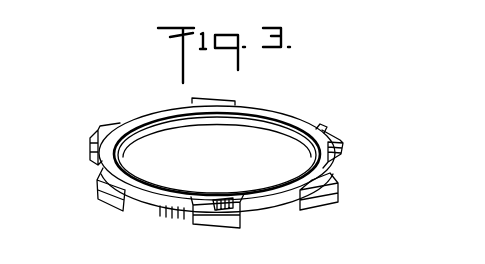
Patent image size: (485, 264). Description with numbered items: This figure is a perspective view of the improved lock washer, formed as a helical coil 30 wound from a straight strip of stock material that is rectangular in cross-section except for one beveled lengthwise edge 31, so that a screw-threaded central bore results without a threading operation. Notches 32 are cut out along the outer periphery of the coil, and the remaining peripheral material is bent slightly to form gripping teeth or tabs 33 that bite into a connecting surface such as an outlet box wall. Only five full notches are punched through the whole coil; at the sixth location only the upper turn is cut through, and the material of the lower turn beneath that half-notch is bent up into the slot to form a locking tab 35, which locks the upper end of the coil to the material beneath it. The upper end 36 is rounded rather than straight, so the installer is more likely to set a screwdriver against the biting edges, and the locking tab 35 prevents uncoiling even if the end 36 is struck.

The helical coil 30 is at (104, 124).
The beveled lengthwise edge 31 is at (175, 126).
The notches 32 is at (93, 160).
The gripping teeth or tabs 33 is at (343, 193).
The locking tab 35 is at (160, 210).
The rounded end 36 is at (233, 196).